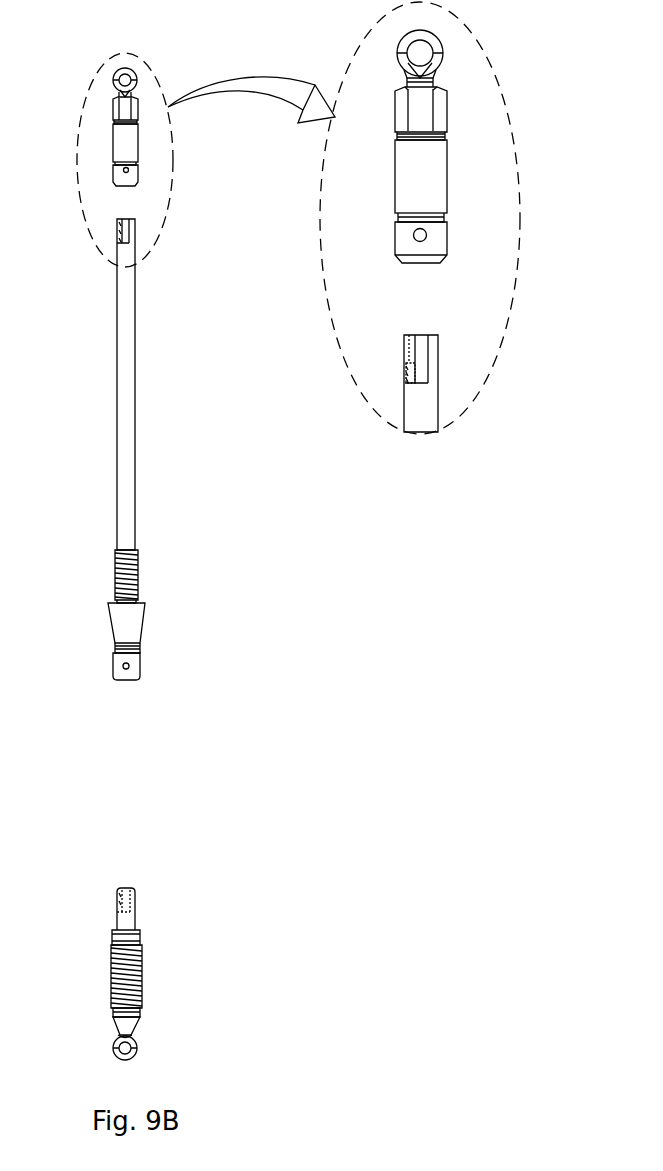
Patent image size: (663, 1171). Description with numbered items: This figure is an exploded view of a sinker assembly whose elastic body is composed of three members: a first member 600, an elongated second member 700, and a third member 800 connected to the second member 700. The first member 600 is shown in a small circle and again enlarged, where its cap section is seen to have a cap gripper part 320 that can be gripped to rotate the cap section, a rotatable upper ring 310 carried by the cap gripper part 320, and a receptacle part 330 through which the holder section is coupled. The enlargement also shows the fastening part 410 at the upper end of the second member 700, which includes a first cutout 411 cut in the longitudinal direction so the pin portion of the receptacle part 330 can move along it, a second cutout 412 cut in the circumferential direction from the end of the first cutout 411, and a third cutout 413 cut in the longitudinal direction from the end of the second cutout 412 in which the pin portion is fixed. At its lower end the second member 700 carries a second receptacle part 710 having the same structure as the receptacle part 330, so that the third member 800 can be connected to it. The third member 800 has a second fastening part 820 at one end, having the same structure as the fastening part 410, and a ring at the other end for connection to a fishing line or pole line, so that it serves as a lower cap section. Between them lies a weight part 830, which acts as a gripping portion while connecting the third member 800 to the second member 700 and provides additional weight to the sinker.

The upper ring 310 is at (441, 42).
The cap gripper part 320 is at (447, 105).
The receptacle part 330 is at (427, 172).
The fastening part 410 is at (416, 404).
The first cutout 411 is at (422, 359).
The second cutout 412 is at (408, 393).
The third cutout 413 is at (405, 365).
The first member 600 is at (171, 155).
The second member 700 is at (207, 449).
The second receptacle part 710 is at (139, 650).
The third member 800 is at (180, 974).
The second fastening part 820 is at (128, 920).
The weight part 830 is at (112, 972).